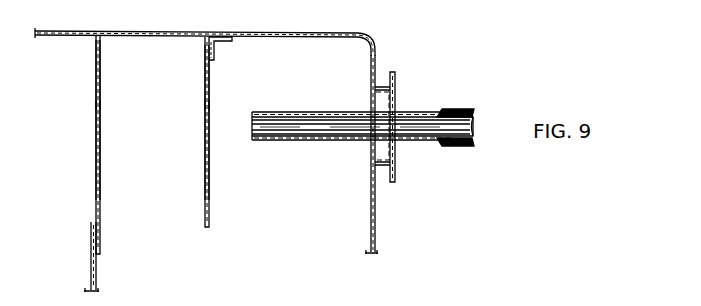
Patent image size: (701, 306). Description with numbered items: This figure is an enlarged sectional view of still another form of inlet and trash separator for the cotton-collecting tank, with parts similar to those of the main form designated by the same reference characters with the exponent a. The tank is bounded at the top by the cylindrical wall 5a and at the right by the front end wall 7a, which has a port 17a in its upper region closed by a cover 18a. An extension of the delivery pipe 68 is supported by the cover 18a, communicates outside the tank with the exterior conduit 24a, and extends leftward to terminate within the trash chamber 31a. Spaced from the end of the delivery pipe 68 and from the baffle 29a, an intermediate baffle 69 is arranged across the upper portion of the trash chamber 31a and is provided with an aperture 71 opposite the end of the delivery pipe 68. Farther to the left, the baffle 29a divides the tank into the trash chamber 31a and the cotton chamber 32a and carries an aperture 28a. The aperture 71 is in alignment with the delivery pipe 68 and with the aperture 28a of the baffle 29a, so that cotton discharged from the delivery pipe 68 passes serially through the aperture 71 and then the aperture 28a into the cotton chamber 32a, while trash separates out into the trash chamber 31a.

The cylindrical wall 5a is at (63, 31).
The baffle 29a is at (96, 69).
The aperture 28a is at (96, 121).
The cotton chamber 32a is at (65, 163).
The intermediate baffle 69 is at (209, 80).
The aperture 71 is at (205, 123).
The trash chamber 31a is at (217, 150).
The delivery pipe 68 is at (309, 112).
The port 17a is at (395, 86).
The cover 18a is at (396, 106).
The exterior conduit 24a is at (443, 148).
The front end wall 7a is at (376, 225).